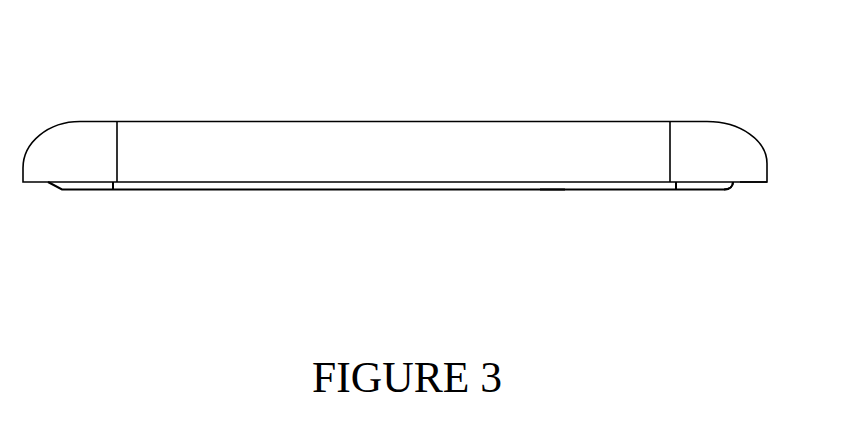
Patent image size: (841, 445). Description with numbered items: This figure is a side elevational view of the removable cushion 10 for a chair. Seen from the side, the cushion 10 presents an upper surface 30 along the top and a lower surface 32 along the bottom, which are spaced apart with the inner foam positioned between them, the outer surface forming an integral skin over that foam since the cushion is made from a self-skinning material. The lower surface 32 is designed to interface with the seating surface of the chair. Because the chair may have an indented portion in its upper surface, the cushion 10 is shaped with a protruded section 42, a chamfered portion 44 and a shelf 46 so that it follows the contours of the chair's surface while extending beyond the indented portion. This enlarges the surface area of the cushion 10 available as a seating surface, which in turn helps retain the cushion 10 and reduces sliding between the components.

The removable cushion 10 is at (417, 137).
The upper surface 30 is at (228, 122).
The lower surface 32 is at (270, 190).
The protruded section 42 is at (552, 197).
The chamfered portion 44 is at (730, 190).
The shelf 46 is at (757, 182).